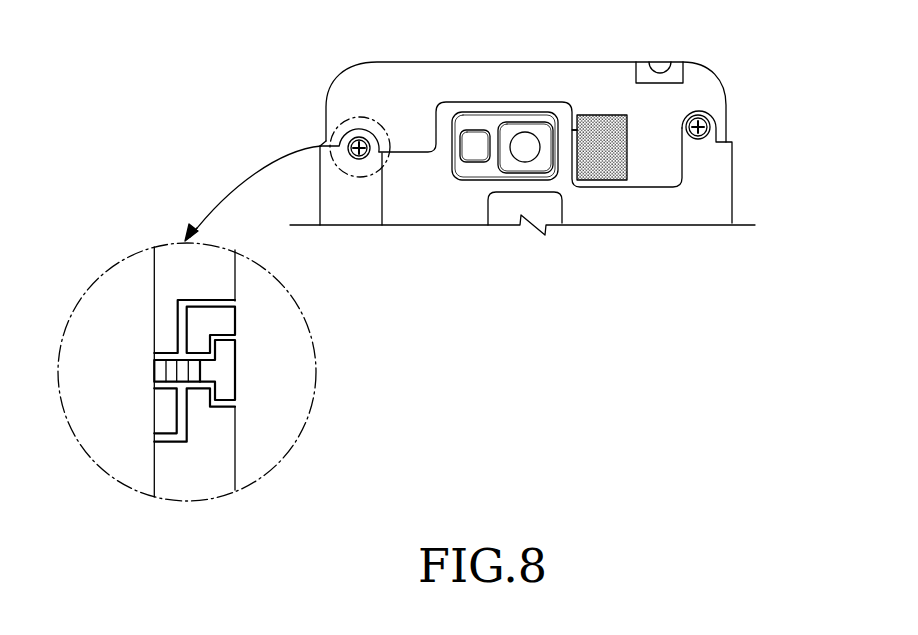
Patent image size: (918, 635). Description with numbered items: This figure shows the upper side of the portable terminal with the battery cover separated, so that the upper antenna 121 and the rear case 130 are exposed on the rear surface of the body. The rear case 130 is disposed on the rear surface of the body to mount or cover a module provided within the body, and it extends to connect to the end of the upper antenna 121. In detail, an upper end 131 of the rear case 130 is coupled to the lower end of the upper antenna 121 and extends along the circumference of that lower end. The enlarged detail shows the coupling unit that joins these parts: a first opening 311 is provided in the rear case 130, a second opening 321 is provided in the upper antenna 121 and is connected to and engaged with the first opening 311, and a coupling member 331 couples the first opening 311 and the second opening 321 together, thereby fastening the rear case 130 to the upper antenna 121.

The upper antenna 121 is at (598, 70).
The rear case 130 is at (722, 193).
The upper end of the rear case 131 is at (673, 185).
The first opening 311 is at (196, 393).
The second opening 321 is at (167, 390).
The coupling member 331 is at (235, 372).